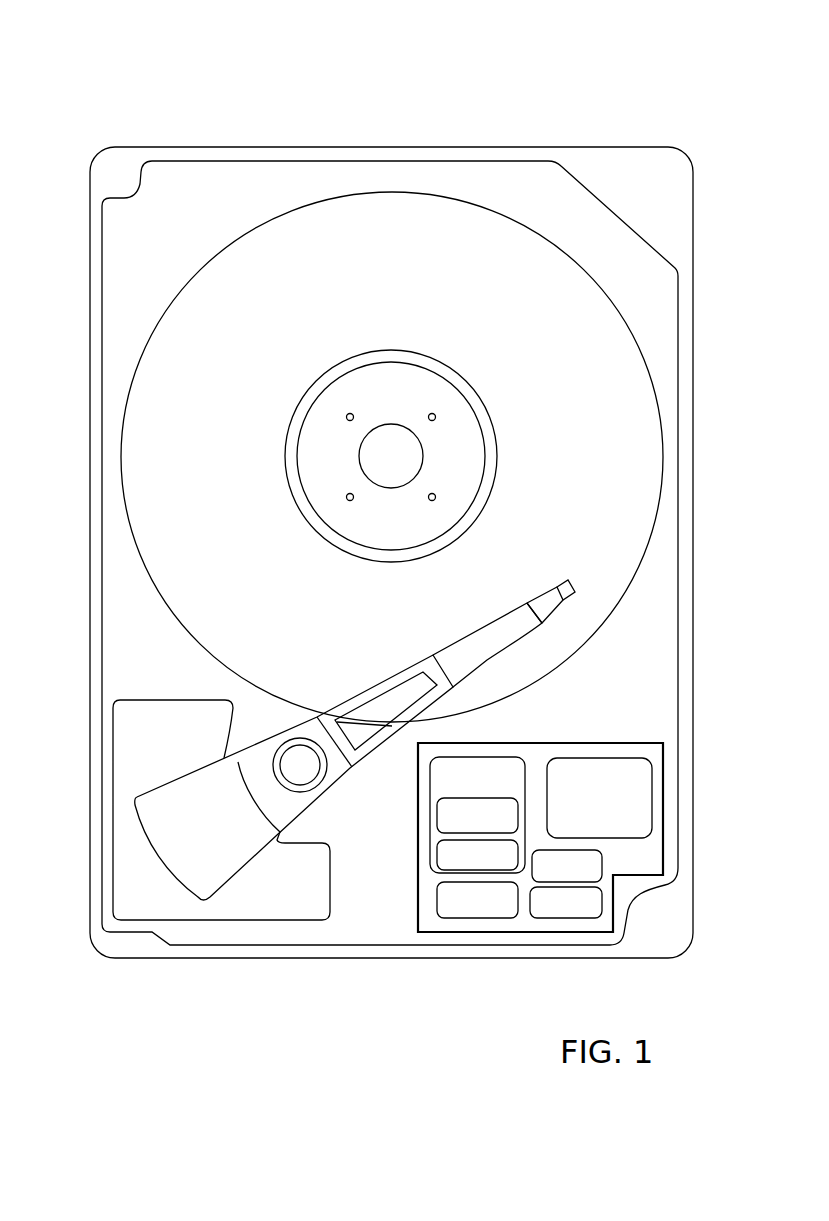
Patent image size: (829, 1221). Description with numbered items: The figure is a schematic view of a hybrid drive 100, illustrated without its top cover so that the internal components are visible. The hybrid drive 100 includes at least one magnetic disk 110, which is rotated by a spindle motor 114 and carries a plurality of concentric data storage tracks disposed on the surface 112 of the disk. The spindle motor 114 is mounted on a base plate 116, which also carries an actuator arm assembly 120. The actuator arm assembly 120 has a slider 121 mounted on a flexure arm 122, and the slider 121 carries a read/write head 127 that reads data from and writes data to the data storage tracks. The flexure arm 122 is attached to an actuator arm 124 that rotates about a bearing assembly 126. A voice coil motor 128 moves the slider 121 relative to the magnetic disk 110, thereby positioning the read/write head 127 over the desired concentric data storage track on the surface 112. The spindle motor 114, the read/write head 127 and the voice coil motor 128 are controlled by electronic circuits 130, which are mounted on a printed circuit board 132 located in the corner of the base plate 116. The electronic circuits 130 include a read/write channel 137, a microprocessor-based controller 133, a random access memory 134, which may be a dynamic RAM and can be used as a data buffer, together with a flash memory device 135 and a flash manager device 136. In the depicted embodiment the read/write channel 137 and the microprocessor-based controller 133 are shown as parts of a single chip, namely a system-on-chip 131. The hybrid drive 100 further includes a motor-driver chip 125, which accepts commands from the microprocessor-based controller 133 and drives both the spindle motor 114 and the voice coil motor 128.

The hybrid drive 100 is at (645, 90).
The magnetic disk 110 is at (202, 268).
The surface 112 is at (193, 441).
The spindle motor 114 is at (473, 407).
The base plate 116 is at (679, 578).
The actuator arm assembly 120 is at (387, 670).
The slider 121 is at (576, 585).
The flexure arm 122 is at (542, 595).
The actuator arm 124 is at (448, 638).
The motor-driver chip 125 is at (462, 909).
The bearing assembly 126 is at (322, 800).
The read/write head 127 is at (565, 574).
The voice coil motor 128 is at (338, 868).
The electronic circuits 130 is at (543, 755).
The system-on-chip 131 is at (462, 792).
The printed circuit board 132 is at (612, 742).
The microprocessor-based controller 133 is at (462, 827).
The random access memory 134 is at (551, 876).
The flash memory device 135 is at (585, 809).
The flash manager device 136 is at (551, 911).
The read/write channel 137 is at (462, 866).